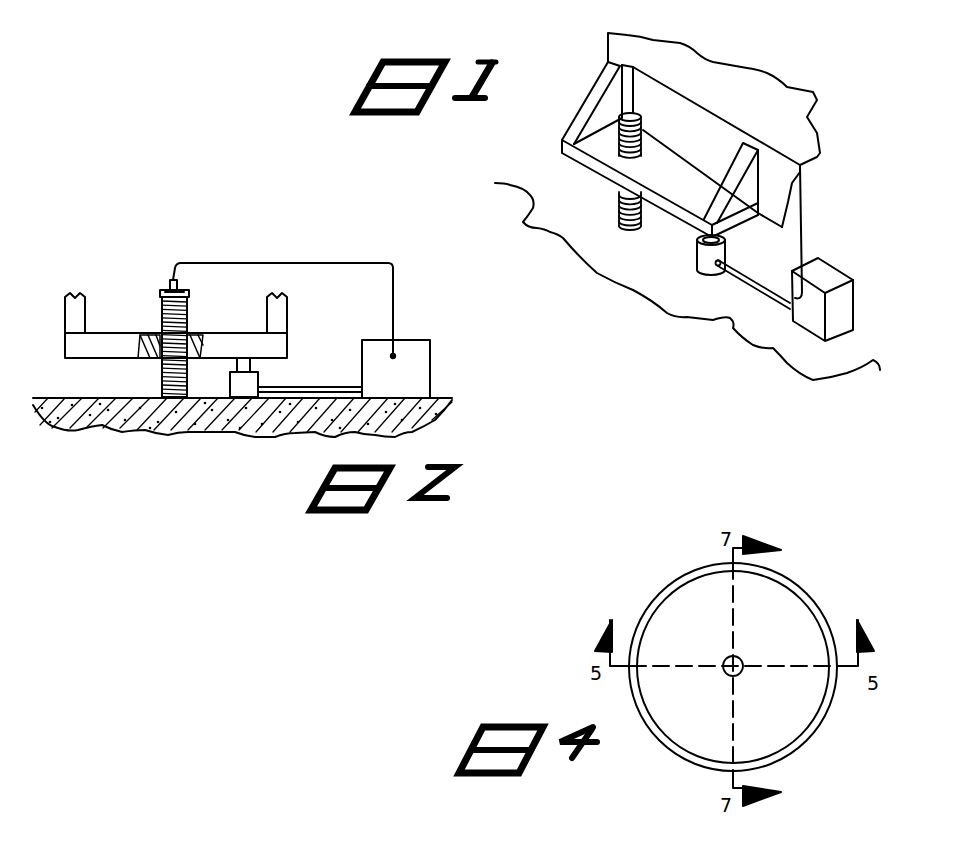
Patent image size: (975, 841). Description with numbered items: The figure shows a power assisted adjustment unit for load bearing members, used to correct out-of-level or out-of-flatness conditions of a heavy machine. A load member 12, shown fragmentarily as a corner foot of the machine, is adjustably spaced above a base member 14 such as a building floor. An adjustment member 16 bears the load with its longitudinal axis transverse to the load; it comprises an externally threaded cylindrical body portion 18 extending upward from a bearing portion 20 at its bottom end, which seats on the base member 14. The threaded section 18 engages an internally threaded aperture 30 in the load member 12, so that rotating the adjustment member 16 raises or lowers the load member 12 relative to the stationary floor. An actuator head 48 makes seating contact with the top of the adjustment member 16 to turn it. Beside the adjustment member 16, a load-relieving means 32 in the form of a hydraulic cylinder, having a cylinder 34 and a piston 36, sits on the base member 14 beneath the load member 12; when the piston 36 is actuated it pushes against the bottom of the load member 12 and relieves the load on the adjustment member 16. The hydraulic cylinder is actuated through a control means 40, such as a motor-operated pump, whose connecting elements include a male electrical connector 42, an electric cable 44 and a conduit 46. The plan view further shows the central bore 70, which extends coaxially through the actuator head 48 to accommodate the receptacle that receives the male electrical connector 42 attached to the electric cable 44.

In FIG. 1, the load member 12 is at (572, 126).
In FIG. 2, the load member 12 is at (110, 332).
In FIG. 1, the base member 14 is at (532, 228).
In FIG. 2, the base member 14 is at (112, 442).
In FIG. 1, the adjustment member 16 is at (612, 198).
In FIG. 2, the adjustment member 16 is at (193, 306).
In FIG. 2, the threaded body portion 18 is at (160, 312).
In FIG. 4, the threaded body portion 18 is at (797, 582).
In FIG. 2, the bearing portion 20 is at (162, 395).
In FIG. 2, the internally threaded aperture 30 is at (145, 350).
In FIG. 1, the load-relieving means 32 is at (715, 290).
In FIG. 2, the load-relieving means 32 is at (268, 374).
In FIG. 2, the cylinder 34 is at (237, 364).
In FIG. 2, the piston 36 is at (233, 363).
In FIG. 1, the control means 40 is at (852, 293).
In FIG. 2, the control means 40 is at (432, 363).
In FIG. 2, the male electrical connector 42 is at (168, 278).
In FIG. 1, the electric cable 44 is at (803, 228).
In FIG. 2, the electric cable 44 is at (396, 282).
In FIG. 1, the conduit 46 is at (748, 285).
In FIG. 2, the conduit 46 is at (318, 395).
In FIG. 1, the actuator head 48 is at (621, 113).
In FIG. 2, the actuator head 48 is at (163, 291).
In FIG. 4, the actuator head 48 is at (668, 592).
In FIG. 4, the central bore 70 is at (740, 660).